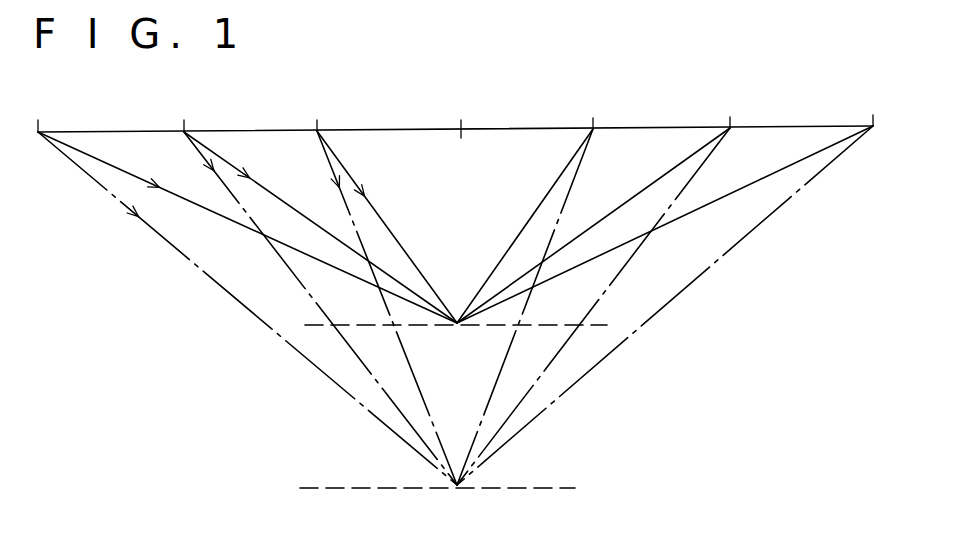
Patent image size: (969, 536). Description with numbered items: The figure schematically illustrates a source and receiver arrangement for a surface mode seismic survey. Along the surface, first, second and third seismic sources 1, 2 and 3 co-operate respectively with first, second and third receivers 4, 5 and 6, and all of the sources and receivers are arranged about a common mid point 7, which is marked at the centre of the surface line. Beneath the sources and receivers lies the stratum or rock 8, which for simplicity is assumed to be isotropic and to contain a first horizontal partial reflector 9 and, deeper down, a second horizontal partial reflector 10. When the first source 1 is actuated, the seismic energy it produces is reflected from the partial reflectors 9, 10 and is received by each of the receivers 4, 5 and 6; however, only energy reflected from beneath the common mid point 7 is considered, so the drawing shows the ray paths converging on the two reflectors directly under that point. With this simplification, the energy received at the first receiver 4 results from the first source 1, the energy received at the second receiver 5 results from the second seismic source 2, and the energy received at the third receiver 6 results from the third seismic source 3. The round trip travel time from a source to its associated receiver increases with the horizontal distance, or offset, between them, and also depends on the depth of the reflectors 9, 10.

The first seismic source 1 is at (319, 124).
The second seismic source 2 is at (186, 124).
The third seismic source 3 is at (40, 124).
The first receiver 4 is at (595, 121).
The second receiver 5 is at (732, 120).
The third receiver 6 is at (872, 120).
The common mid point 7 is at (463, 124).
The stratum or rock 8 is at (664, 347).
The first horizontal partial reflector 9 is at (308, 328).
The second horizontal partial reflector 10 is at (306, 486).